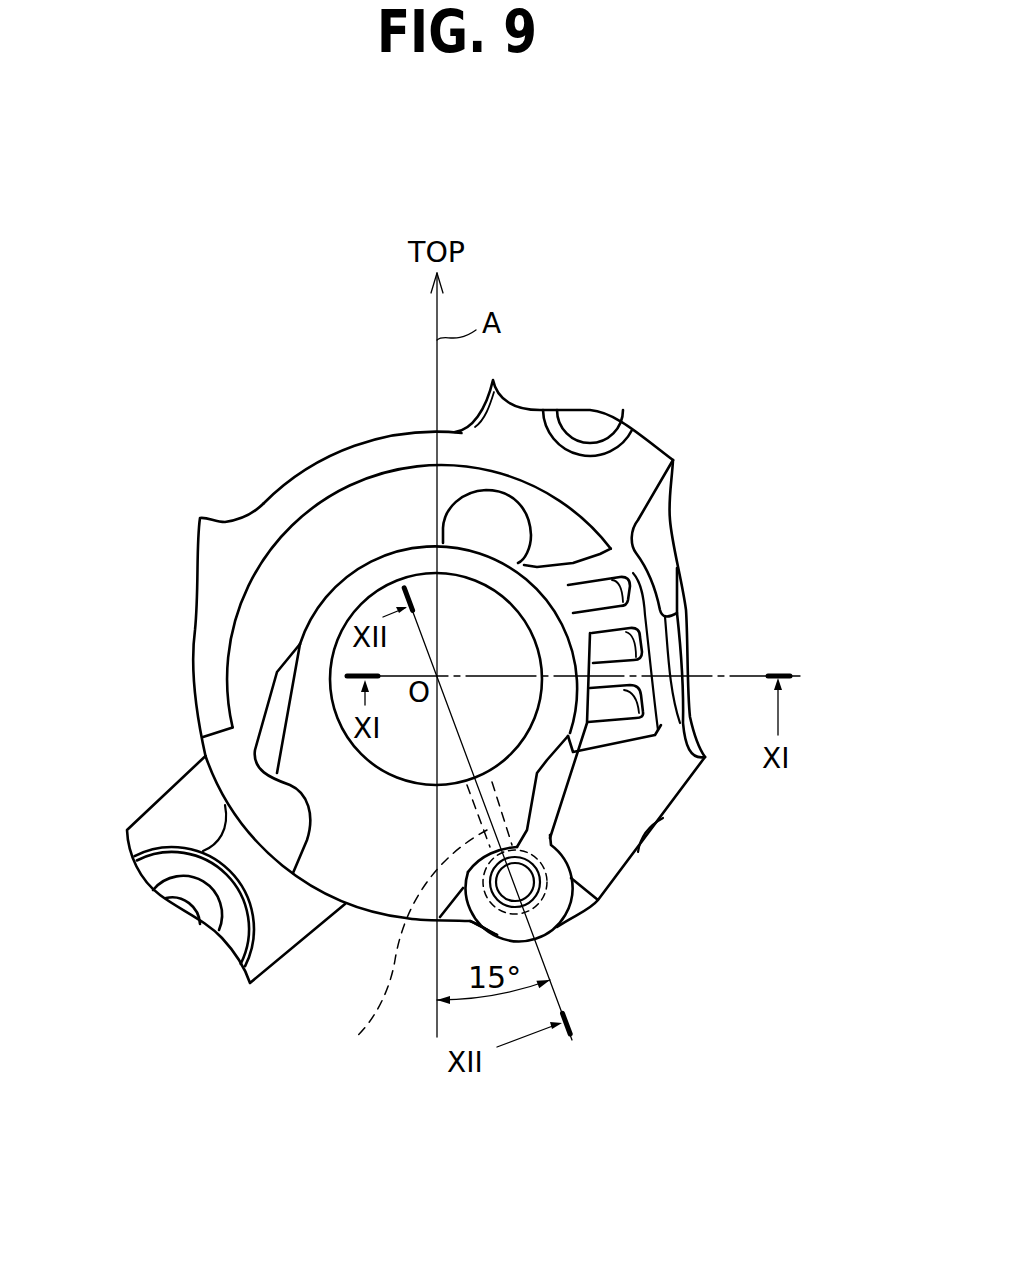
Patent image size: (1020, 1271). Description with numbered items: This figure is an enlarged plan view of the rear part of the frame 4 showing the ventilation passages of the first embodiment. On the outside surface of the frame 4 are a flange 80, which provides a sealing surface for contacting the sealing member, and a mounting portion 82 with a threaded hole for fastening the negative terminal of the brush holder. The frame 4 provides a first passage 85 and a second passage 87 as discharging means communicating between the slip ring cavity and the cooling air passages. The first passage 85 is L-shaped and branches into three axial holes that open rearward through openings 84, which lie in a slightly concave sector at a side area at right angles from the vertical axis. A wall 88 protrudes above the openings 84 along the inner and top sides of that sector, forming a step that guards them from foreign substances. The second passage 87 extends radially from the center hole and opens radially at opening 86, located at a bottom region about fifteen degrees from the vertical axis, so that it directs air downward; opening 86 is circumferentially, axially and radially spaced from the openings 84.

The frame 4 is at (263, 668).
The flange 80 is at (397, 888).
The mounting portion 82 is at (557, 867).
The openings 84 is at (610, 594).
The first passage 85 is at (605, 649).
The opening 86 is at (553, 941).
The second passage 87 is at (413, 929).
The wall 88 is at (562, 574).